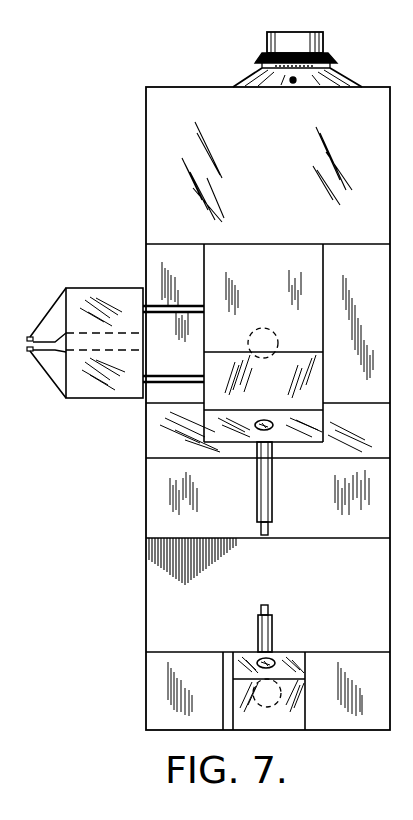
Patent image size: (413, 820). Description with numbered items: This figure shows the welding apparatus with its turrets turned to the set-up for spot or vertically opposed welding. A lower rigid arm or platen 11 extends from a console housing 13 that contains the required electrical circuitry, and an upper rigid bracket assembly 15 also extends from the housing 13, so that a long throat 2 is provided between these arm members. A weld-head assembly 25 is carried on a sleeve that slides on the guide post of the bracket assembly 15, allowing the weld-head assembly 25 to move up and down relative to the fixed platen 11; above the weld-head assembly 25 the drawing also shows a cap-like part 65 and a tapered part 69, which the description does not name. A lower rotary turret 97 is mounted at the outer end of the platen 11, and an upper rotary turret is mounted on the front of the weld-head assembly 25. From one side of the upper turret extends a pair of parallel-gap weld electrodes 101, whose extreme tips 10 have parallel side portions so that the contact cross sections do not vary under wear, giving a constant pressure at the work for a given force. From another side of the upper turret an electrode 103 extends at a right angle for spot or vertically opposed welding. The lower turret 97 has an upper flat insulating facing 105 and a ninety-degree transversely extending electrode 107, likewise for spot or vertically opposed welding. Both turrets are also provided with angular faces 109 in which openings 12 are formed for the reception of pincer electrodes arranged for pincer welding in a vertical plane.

The throat 2 is at (168, 600).
The electrode tips 10 is at (29, 336).
The lower rigid arm or platen 11 is at (353, 652).
The openings 12 is at (263, 420).
The console housing 13 is at (149, 562).
The upper rigid bracket assembly 15 is at (146, 497).
The weld-head assembly 25 is at (142, 194).
The cap 65 is at (268, 38).
The conical neck 69 is at (255, 76).
The lower rotary turret 97 is at (307, 716).
The parallel-gap weld electrodes 101 is at (49, 312).
The electrode 103 is at (266, 479).
The upper flat insulating facing 105 is at (228, 703).
The transversely extending electrode 107 is at (258, 634).
The angular faces 109 is at (240, 430).